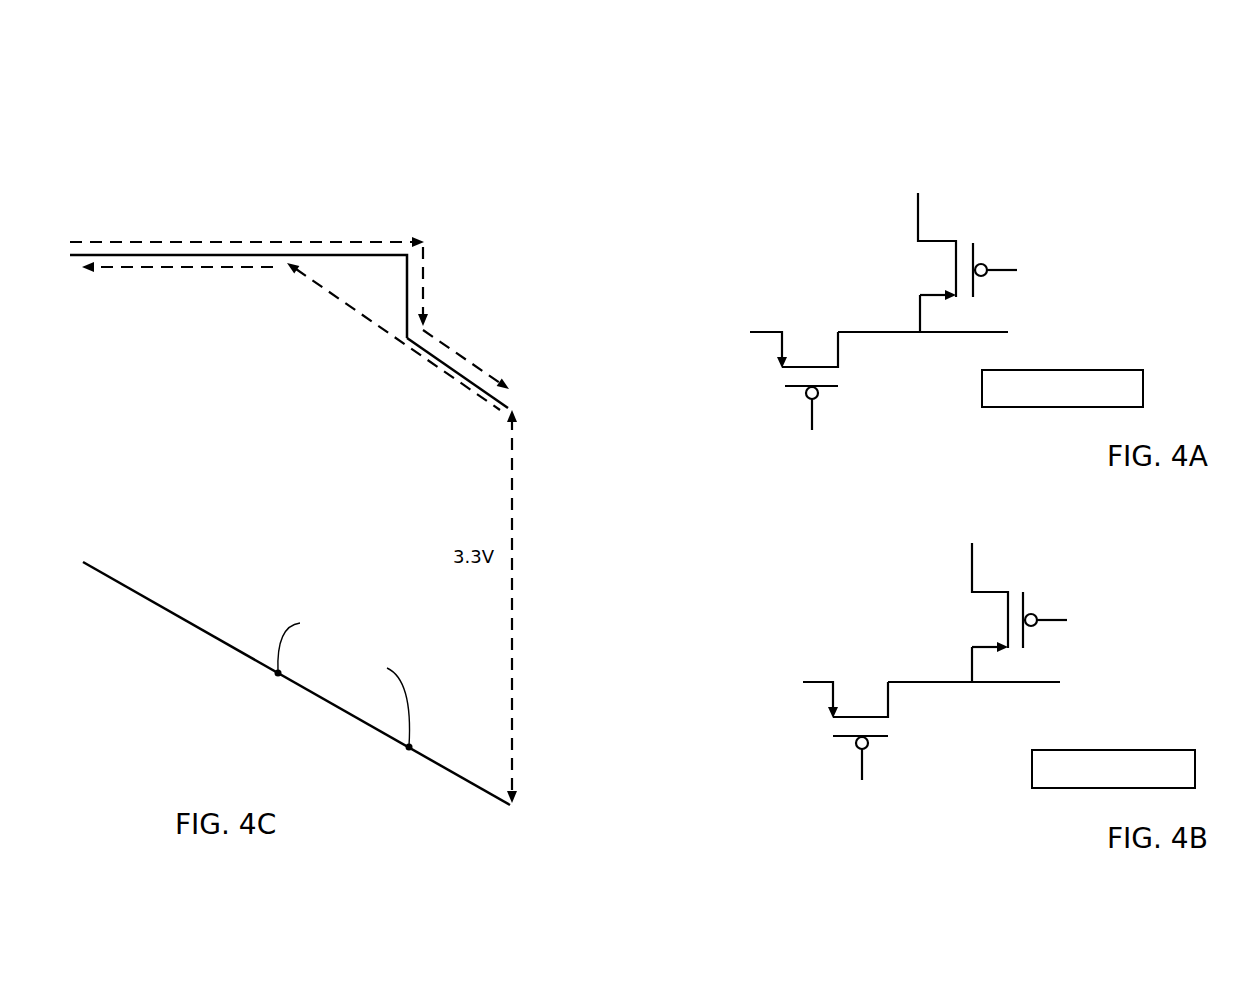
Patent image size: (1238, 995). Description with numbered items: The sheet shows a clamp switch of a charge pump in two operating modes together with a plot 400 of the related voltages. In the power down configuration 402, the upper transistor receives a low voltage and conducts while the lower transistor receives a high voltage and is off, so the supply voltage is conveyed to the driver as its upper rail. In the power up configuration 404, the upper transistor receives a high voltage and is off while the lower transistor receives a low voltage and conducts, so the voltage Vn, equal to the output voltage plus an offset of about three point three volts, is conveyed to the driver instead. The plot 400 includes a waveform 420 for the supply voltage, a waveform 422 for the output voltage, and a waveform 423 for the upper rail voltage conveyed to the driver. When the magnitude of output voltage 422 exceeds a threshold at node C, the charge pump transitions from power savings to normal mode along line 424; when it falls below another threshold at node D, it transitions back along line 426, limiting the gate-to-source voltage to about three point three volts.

In FIG. 4C, the plot 400 is at (405, 164).
In FIG. 4A, the power down circuit configuration 402 is at (1011, 142).
In FIG. 4B, the power up circuit configuration 404 is at (1113, 548).
In FIG. 4C, the waveform 420 is at (143, 254).
In FIG. 4C, the waveform 422 is at (167, 610).
In FIG. 4C, the waveform 423 is at (195, 254).
In FIG. 4C, the line 424 is at (287, 241).
In FIG. 4C, the line 426 is at (113, 268).